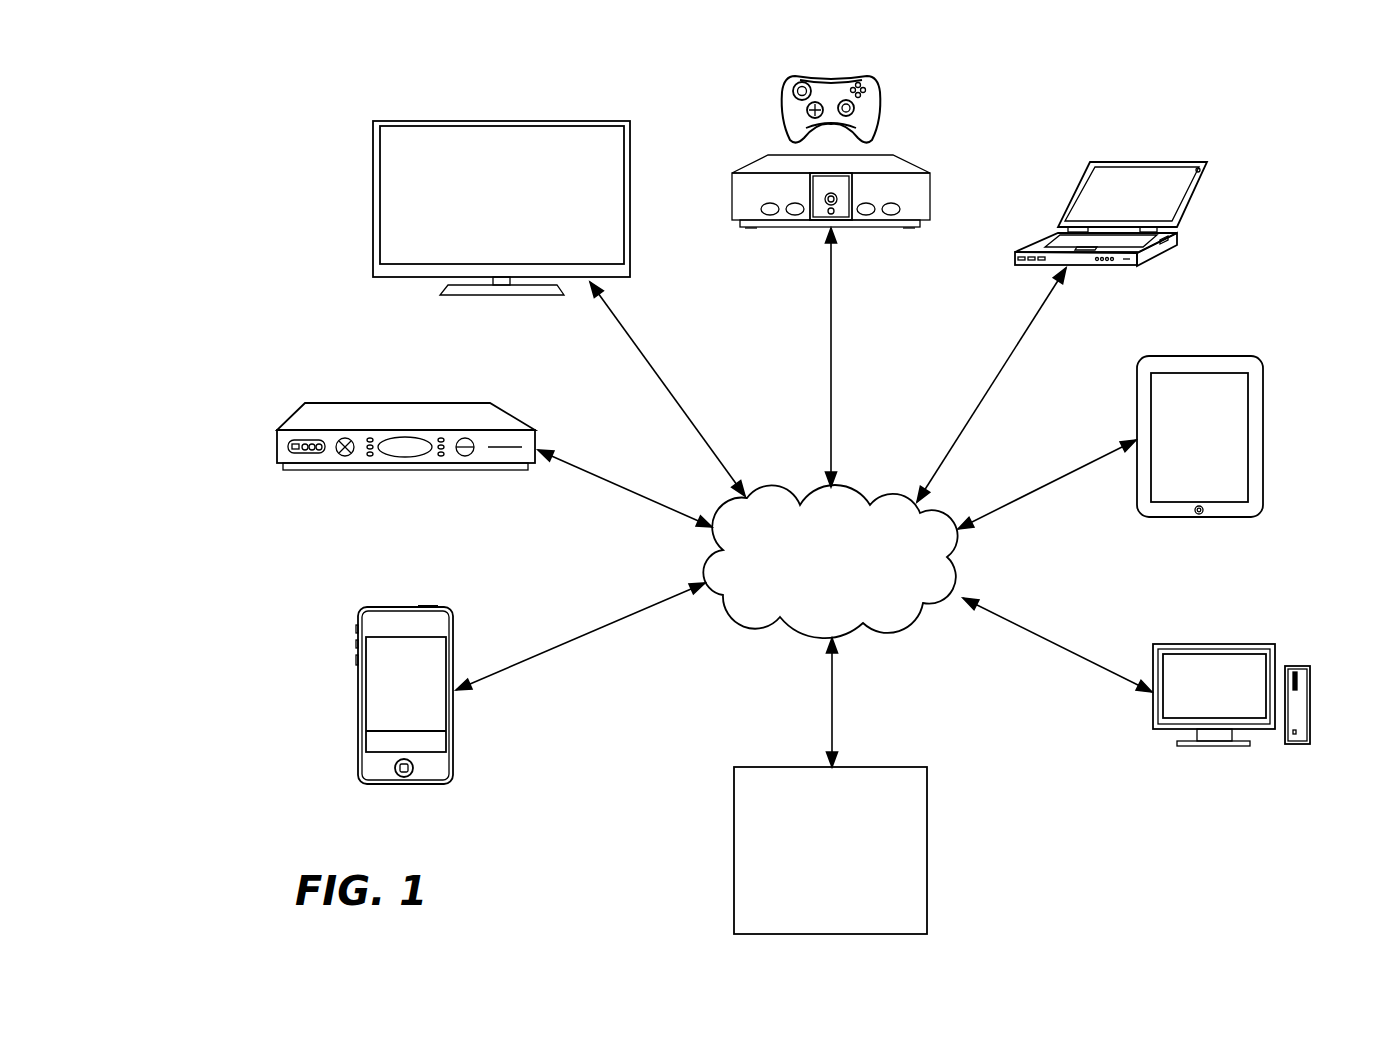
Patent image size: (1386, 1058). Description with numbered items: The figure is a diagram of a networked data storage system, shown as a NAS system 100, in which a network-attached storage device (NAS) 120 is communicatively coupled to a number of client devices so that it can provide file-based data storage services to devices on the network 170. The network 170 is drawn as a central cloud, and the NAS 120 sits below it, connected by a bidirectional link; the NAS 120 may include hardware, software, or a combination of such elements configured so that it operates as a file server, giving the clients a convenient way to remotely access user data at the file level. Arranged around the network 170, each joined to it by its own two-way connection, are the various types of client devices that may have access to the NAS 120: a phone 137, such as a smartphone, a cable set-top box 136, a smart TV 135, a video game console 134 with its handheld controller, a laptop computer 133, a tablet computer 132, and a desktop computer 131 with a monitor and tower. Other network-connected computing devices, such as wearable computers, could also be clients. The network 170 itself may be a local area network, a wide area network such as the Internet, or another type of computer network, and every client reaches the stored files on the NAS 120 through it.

The NAS system 100 is at (236, 137).
The network-attached storage device (NAS) 120 is at (927, 850).
The desktop computer 131 is at (1215, 643).
The tablet computer 132 is at (1198, 355).
The laptop computer 133 is at (1153, 160).
The video game console 134 is at (908, 160).
The smart TV 135 is at (500, 120).
The cable set-top box 136 is at (413, 402).
The phone 137 is at (403, 606).
The network 170 is at (880, 630).